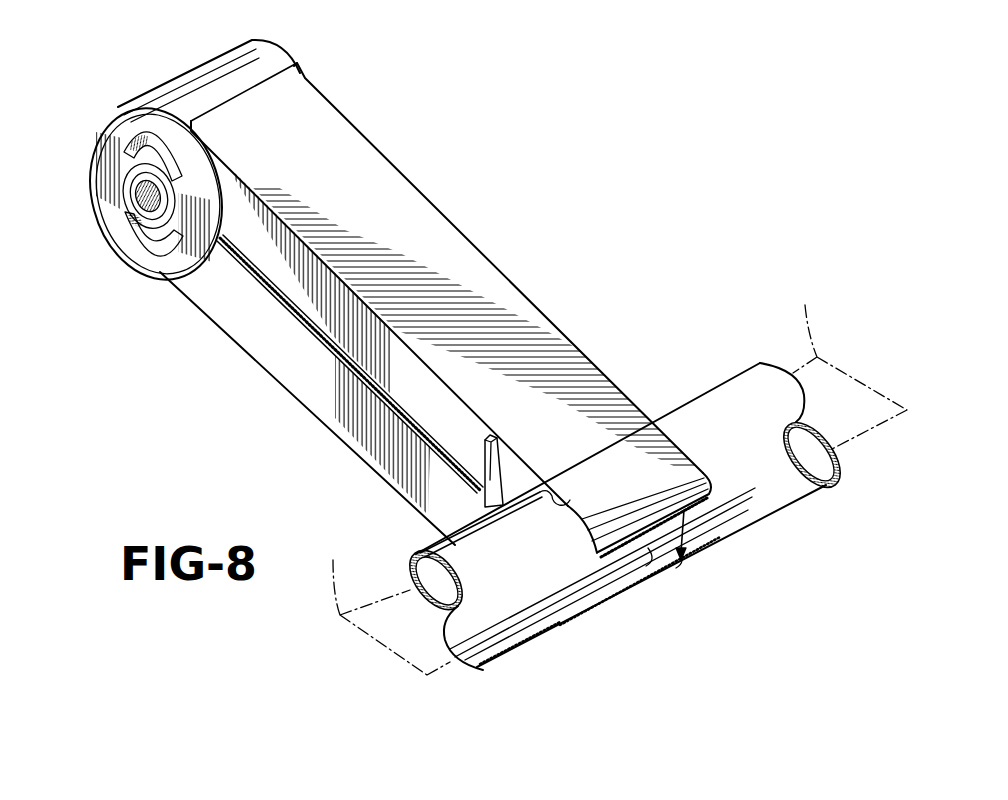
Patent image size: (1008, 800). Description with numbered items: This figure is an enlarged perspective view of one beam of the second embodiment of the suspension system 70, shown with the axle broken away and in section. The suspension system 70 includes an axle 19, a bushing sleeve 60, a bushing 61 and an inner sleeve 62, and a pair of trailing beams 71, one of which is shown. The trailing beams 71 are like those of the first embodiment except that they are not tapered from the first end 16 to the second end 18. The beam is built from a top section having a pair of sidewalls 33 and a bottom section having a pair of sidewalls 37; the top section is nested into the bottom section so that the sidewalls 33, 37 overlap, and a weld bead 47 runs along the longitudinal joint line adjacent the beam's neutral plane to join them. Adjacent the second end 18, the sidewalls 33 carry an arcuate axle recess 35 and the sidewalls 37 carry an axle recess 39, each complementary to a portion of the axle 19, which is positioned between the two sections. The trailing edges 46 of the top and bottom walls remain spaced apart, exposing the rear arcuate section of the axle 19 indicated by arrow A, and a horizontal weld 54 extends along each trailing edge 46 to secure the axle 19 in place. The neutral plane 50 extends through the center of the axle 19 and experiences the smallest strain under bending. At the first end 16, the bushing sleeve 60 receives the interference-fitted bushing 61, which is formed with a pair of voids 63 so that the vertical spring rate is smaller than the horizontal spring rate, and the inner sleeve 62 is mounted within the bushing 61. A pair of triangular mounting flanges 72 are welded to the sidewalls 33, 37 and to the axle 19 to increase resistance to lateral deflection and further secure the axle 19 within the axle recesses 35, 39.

The first end 16 is at (447, 273).
The second end 18 is at (677, 455).
The axle 19 is at (775, 500).
The sidewalls 33 is at (270, 262).
The arcuate axle recess 35 is at (571, 500).
The sidewalls 37 is at (283, 357).
The axle recess 39 is at (567, 622).
The trailing edge 46 is at (702, 495).
The weld bead 47 is at (285, 302).
The neutral plane 50 is at (613, 476).
The horizontal weld 54 is at (677, 560).
The bushing sleeve 60 is at (278, 52).
The bushing 61 is at (120, 178).
The inner sleeve 62 is at (134, 196).
The voids 63 is at (145, 232).
The suspension system 70 is at (485, 240).
The trailing beams 71 is at (507, 288).
The mounting flanges 72 is at (483, 460).
The arrow A is at (690, 548).